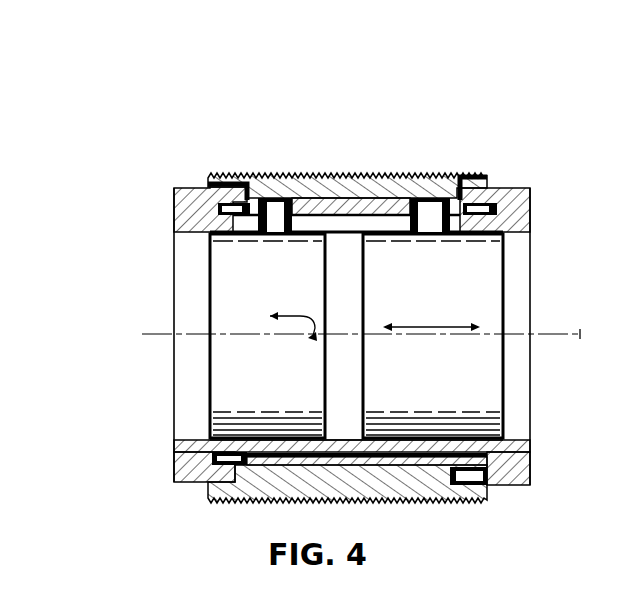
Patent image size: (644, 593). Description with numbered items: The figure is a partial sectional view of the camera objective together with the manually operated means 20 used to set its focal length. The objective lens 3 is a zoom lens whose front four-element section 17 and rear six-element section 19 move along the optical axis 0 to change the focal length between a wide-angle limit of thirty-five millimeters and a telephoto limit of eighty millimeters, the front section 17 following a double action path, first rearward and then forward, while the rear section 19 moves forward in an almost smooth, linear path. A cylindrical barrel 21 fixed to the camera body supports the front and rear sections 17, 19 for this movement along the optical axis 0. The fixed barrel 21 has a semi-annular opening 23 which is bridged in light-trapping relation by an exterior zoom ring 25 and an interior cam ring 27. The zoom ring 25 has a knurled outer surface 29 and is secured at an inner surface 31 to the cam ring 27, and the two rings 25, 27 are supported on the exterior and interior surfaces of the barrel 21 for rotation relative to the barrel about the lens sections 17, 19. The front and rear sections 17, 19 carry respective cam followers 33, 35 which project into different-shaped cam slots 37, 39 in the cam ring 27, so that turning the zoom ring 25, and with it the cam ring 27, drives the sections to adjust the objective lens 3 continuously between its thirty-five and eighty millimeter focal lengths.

The manually operated means 20 is at (272, 122).
The objective lens 3 is at (148, 323).
The optical axis 0 is at (588, 334).
The front four-element section 17 is at (210, 410).
The rear six-element section 19 is at (363, 410).
The cylindrical barrel 21 is at (174, 211).
The semi-annular opening 23 is at (300, 198).
The exterior zoom ring 25 is at (372, 172).
The interior cam ring 27 is at (192, 188).
The knurled outer surface 29 is at (420, 172).
The inner surface 31 is at (332, 172).
The cam follower 33 is at (268, 228).
The cam follower 35 is at (430, 228).
The cam slot 37 is at (260, 182).
The cam slot 39 is at (450, 172).